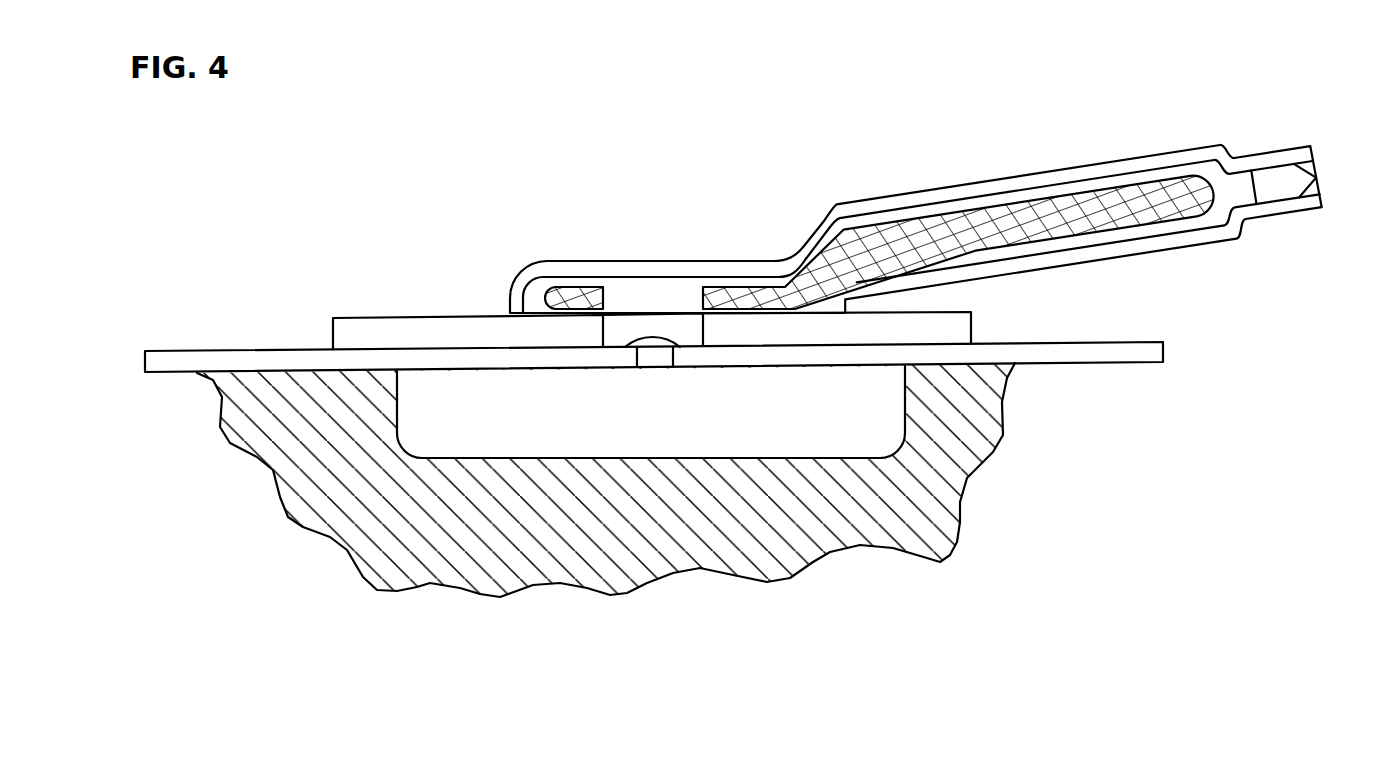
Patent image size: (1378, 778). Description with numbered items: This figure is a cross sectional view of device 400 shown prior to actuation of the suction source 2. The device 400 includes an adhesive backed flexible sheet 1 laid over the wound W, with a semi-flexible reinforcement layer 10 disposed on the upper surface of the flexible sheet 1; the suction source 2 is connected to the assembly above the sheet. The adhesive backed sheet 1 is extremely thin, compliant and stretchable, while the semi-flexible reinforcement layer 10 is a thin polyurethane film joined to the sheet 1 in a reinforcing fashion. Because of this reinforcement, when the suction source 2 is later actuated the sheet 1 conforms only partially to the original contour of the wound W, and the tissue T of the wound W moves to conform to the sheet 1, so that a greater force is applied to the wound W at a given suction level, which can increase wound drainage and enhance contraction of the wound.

The adhesive backed flexible sheet 1 is at (145, 361).
The suction source 2 is at (894, 155).
The semi-flexible reinforcement layer 10 is at (394, 298).
The device 400 is at (786, 92).
The wound W is at (865, 425).
The tissue T is at (637, 459).